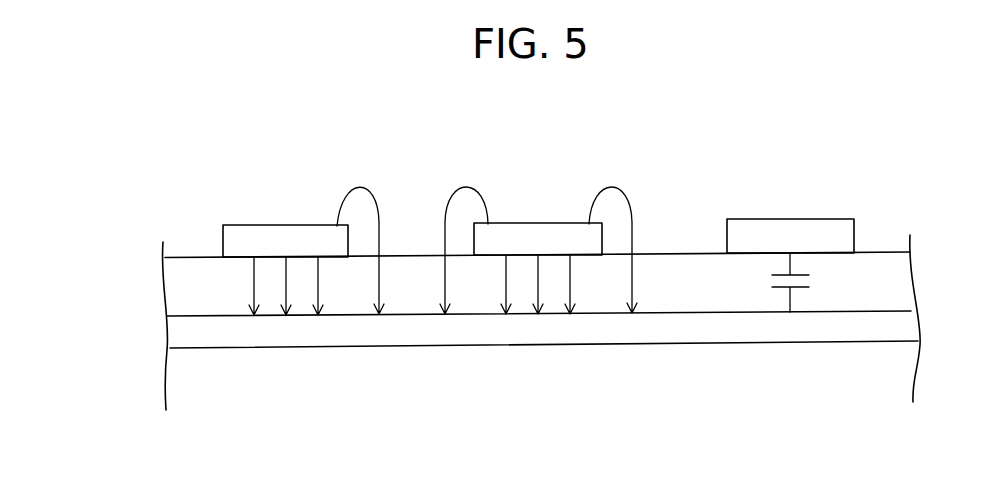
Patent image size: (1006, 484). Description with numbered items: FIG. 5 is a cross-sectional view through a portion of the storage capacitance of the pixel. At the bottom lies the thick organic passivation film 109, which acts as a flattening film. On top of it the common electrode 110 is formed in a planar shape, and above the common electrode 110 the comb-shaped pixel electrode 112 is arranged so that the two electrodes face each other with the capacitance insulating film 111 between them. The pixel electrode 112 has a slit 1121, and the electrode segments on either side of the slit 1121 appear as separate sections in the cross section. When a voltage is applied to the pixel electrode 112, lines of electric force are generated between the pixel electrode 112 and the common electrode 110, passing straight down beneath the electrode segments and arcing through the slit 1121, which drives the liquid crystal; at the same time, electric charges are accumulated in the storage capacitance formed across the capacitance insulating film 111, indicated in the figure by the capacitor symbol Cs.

The organic passivation film 109 is at (195, 379).
The common electrode 110 is at (185, 334).
The capacitance insulating film 111 is at (178, 288).
The pixel electrode 112 is at (260, 224).
The slit 1121 is at (413, 220).